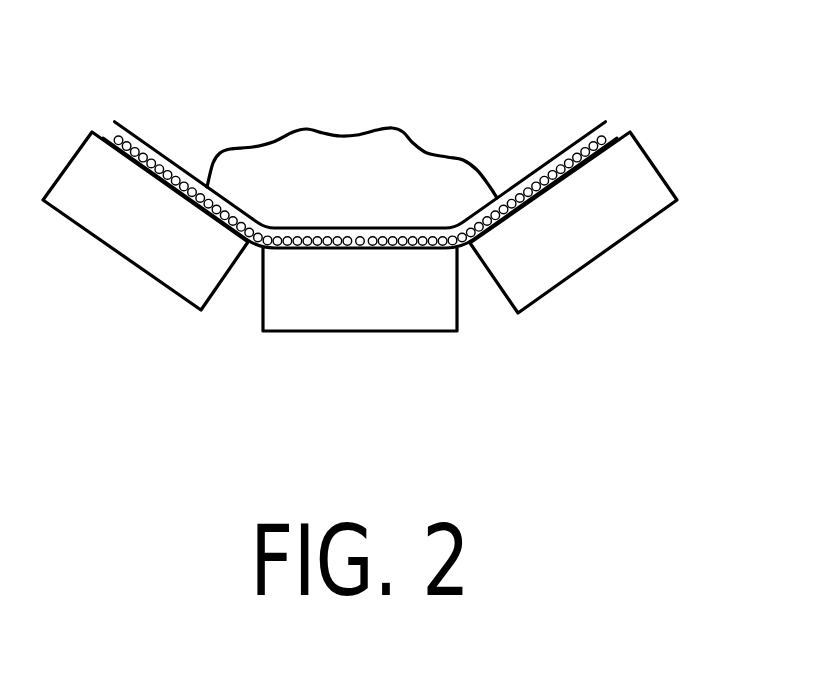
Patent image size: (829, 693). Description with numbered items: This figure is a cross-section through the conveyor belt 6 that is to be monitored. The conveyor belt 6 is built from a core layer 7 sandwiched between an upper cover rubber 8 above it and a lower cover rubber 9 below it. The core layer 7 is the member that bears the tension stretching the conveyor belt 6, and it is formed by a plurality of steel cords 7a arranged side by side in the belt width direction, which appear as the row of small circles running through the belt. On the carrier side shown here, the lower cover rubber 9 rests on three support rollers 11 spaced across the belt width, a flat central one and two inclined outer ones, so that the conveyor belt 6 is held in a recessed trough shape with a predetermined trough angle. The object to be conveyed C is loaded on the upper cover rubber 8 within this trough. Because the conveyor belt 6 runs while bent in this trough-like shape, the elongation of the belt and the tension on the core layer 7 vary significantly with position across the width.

The conveyor belt 6 is at (360, 182).
The core layer 7 is at (360, 214).
The steel cords 7a is at (393, 243).
The upper cover rubber 8 is at (224, 200).
The lower cover rubber 9 is at (293, 250).
The support rollers 11 is at (140, 237).
The object to be conveyed C is at (322, 150).